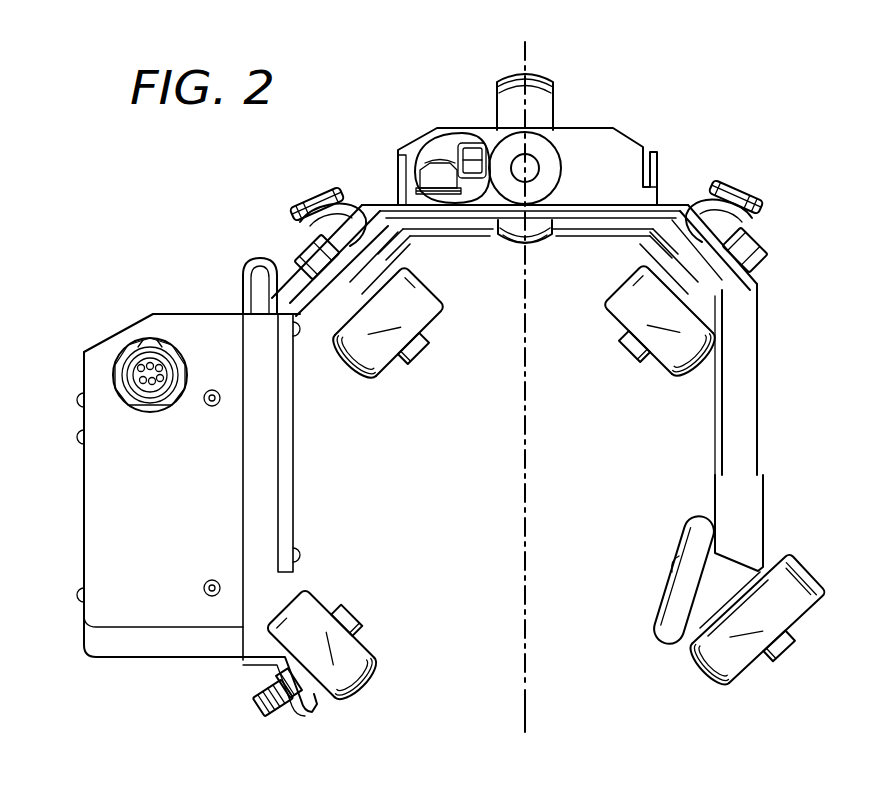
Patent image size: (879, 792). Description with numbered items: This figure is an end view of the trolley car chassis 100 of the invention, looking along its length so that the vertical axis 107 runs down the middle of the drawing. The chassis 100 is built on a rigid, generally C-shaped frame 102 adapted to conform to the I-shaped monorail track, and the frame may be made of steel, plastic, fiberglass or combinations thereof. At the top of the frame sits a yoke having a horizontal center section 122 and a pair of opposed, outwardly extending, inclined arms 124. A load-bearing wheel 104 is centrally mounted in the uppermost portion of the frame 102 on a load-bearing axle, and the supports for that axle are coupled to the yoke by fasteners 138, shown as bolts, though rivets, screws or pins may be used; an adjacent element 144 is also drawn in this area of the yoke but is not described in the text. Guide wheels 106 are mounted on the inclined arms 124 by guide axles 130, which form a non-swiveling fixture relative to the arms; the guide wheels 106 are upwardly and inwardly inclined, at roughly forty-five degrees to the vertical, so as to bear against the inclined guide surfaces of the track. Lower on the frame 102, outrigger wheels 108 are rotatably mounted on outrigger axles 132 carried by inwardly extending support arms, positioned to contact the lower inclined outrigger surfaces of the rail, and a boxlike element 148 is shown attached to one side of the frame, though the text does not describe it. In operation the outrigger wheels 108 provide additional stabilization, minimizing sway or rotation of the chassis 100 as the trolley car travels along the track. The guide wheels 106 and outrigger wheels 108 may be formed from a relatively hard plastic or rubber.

The trolley car chassis 100 is at (700, 44).
The C shaped frame 102 is at (758, 370).
The load-bearing wheel 104 is at (510, 70).
The guide wheel 106 is at (433, 308).
The vertical axis 107 is at (526, 705).
The outrigger wheel 108 is at (372, 693).
The horizontal center section 122 is at (572, 232).
The inclined arm 124 is at (757, 292).
The guide axle 130 is at (417, 347).
The outrigger axle 132 is at (257, 712).
The fastener 138 is at (433, 160).
The bolt 144 is at (468, 140).
The controller housing 148 is at (80, 498).